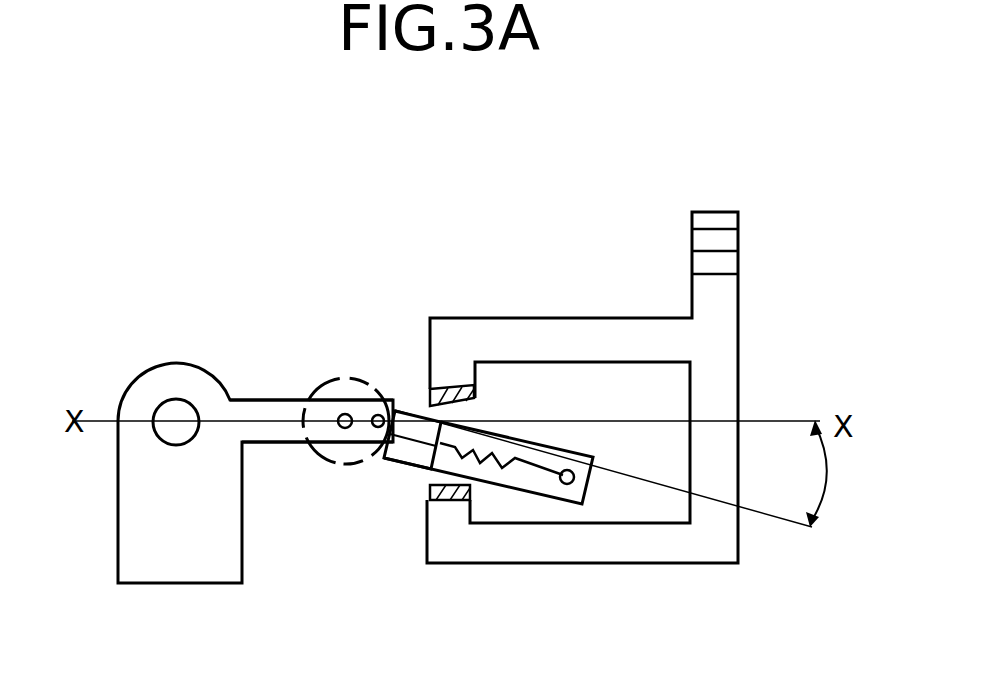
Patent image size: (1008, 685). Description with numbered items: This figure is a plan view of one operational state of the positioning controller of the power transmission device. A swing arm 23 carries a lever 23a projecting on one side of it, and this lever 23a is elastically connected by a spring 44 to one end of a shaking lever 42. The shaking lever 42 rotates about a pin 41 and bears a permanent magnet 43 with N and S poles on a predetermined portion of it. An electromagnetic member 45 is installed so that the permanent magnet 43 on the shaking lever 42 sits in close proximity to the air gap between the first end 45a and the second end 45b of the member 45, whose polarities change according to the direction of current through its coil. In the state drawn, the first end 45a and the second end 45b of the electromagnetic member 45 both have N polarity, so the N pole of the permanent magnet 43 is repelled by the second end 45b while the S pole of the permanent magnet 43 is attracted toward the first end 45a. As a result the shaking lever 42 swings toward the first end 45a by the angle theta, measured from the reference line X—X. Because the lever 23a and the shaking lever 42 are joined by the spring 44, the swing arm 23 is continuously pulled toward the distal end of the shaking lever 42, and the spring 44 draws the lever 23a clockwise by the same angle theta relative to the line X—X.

The swing arm 23 is at (160, 536).
The lever 23a is at (270, 472).
The pin 41 is at (340, 385).
The shaking lever 42 is at (568, 469).
The permanent magnet 43 is at (400, 462).
The spring 44 is at (512, 468).
The electromagnetic member 45 is at (739, 318).
The first end 45a is at (443, 517).
The second end 45b is at (443, 357).